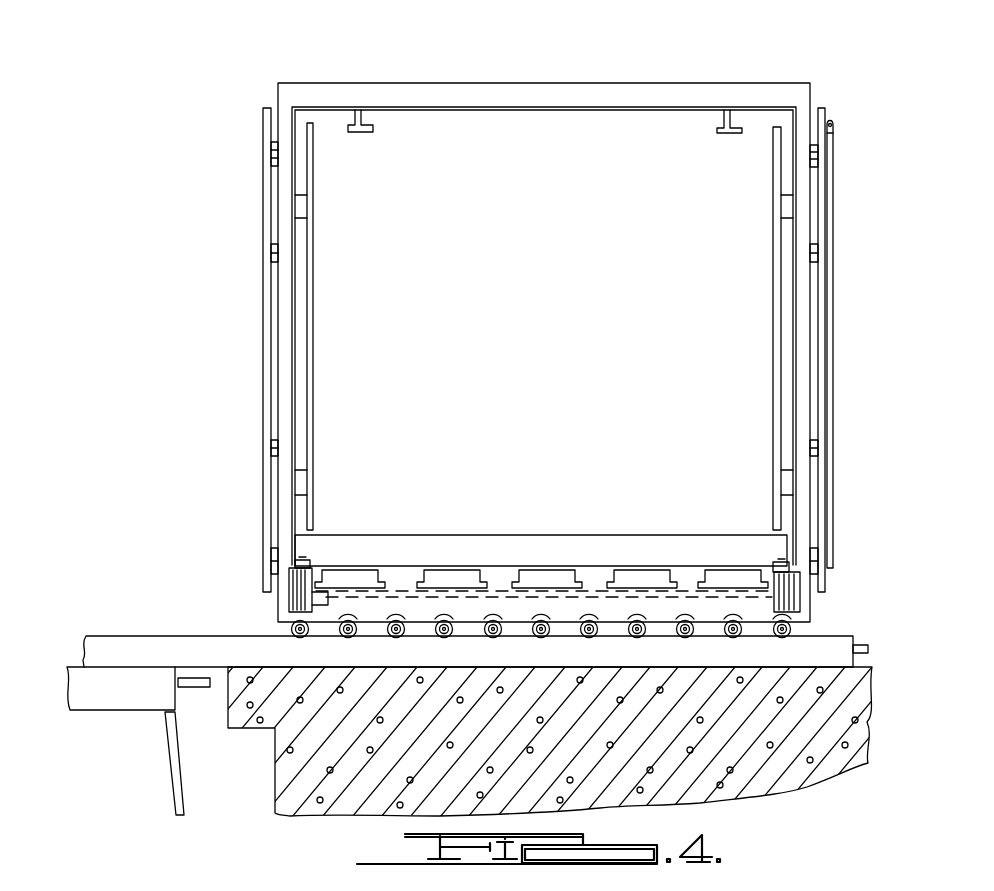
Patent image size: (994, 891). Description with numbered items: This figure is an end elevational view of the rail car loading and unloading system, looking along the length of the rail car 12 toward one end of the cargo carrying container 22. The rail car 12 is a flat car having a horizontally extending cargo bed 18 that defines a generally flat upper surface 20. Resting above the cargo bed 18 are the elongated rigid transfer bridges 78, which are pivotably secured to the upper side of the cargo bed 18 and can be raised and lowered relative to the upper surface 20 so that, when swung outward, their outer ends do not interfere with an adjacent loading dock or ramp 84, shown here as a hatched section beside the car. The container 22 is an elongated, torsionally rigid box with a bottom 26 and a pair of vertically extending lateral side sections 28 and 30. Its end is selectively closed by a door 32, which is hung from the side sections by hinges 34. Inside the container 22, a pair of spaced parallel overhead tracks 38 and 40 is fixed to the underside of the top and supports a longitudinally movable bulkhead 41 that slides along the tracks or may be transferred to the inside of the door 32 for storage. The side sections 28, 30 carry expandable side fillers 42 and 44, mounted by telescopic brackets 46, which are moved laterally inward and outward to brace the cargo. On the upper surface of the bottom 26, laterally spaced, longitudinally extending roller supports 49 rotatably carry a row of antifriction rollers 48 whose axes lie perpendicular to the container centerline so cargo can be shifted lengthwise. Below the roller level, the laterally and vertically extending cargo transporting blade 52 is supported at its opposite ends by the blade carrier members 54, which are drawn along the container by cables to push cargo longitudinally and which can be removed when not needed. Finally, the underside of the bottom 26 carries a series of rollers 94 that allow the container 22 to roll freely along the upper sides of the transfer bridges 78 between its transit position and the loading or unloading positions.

The rail car 12 is at (102, 712).
The cargo bed 18 is at (83, 690).
The upper surface 20 is at (152, 660).
The cargo carrying container 22 is at (572, 80).
The bottom 26 is at (616, 622).
The lateral side section 28 is at (797, 292).
The lateral side section 30 is at (295, 353).
The door 32 is at (828, 106).
The hinge 34 is at (272, 252).
The overhead track 38 is at (366, 140).
The overhead track 40 is at (727, 134).
The bulkhead 41 is at (836, 322).
The side filler 42 is at (771, 263).
The side filler 44 is at (318, 284).
The telescopic bracket 46 is at (300, 208).
The antifriction roller 48 is at (372, 575).
The roller support 49 is at (405, 585).
The cargo transporting blade 52 is at (534, 532).
The blade carrier member 54 is at (296, 575).
The transfer bridge 78 is at (230, 632).
The loading dock 84 is at (283, 792).
The roller 94 is at (460, 637).